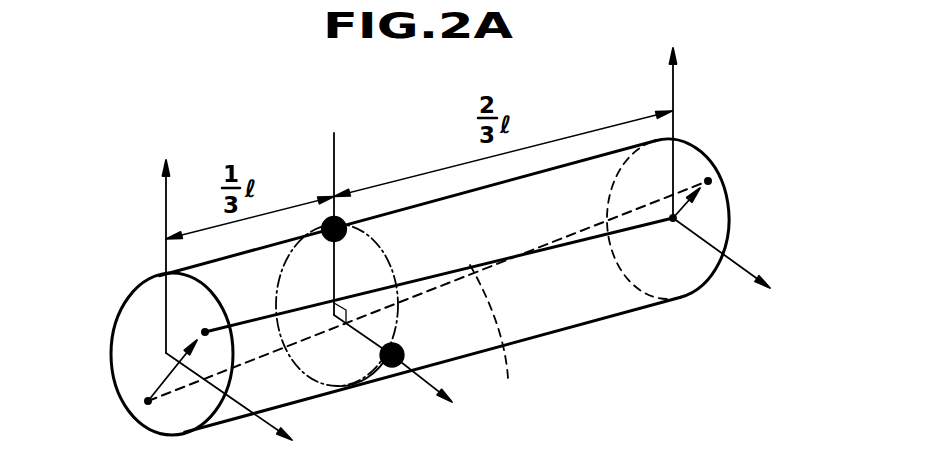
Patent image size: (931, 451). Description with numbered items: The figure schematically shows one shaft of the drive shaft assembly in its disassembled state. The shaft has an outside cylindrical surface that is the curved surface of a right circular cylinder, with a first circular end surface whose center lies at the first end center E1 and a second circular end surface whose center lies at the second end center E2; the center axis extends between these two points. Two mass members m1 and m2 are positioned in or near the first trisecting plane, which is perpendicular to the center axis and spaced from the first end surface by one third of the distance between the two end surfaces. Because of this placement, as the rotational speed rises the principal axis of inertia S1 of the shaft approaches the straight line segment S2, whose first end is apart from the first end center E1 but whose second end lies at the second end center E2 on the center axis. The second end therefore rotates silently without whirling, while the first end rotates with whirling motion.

The first end center E1 is at (165, 355).
The second end center E2 is at (673, 218).
The first mass member m1 is at (346, 223).
The second mass member m2 is at (388, 366).
The principal axis of inertia S1 is at (495, 332).
The straight line segment S2 is at (470, 267).